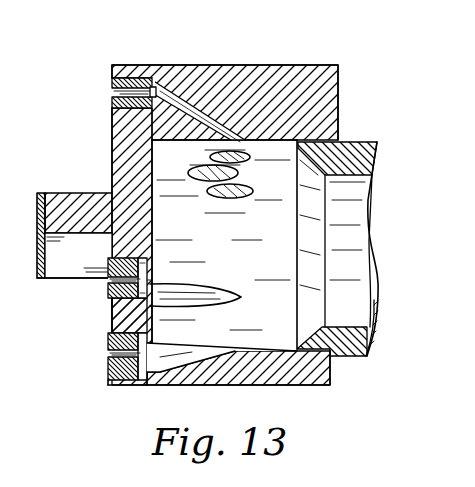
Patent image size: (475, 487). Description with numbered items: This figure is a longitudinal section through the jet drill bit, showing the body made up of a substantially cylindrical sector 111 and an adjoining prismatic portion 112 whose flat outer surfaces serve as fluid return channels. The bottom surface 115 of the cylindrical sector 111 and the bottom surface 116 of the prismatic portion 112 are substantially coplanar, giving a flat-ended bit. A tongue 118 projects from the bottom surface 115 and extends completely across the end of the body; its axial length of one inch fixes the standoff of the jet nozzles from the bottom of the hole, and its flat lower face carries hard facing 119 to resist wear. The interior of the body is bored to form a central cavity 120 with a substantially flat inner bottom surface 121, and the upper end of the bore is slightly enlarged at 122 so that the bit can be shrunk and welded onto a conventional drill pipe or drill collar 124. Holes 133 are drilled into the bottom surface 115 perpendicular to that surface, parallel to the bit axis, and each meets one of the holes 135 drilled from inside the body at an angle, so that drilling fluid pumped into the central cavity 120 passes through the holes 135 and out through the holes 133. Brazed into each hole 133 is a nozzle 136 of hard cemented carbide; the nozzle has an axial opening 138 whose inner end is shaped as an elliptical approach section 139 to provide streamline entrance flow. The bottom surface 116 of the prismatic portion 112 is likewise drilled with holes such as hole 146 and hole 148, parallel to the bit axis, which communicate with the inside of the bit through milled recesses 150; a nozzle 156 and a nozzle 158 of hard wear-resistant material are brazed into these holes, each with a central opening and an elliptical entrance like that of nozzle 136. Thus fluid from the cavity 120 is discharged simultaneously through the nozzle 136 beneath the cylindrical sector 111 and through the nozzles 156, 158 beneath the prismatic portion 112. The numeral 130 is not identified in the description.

The cylindrical sector 111 is at (277, 66).
The prismatic portion 112 is at (230, 386).
The bottom surface of the cylindrical sector 115 is at (112, 138).
The bottom surface of the prismatic portion 116 is at (108, 326).
The tongue 118 is at (0, 64).
The hard facing 119 is at (40, 280).
The central cavity 120 is at (190, 344).
The inner bottom surface 121 is at (151, 219).
The enlarged upper bore end 122 is at (331, 140).
The drill pipe or drill collar 124 is at (352, 358).
The inlet fitting 130 is at (88, 193).
The perpendicular holes 133 is at (112, 78).
The holes 135 is at (177, 117).
The nozzle 136 is at (113, 84).
The axial opening 138 is at (114, 92).
The elliptical approach section 139 is at (181, 66).
The hole 146 is at (108, 263).
The hole 148 is at (108, 373).
The milled recesses 150 is at (198, 290).
The nozzle 156 is at (147, 276).
The nozzle 158 is at (108, 345).